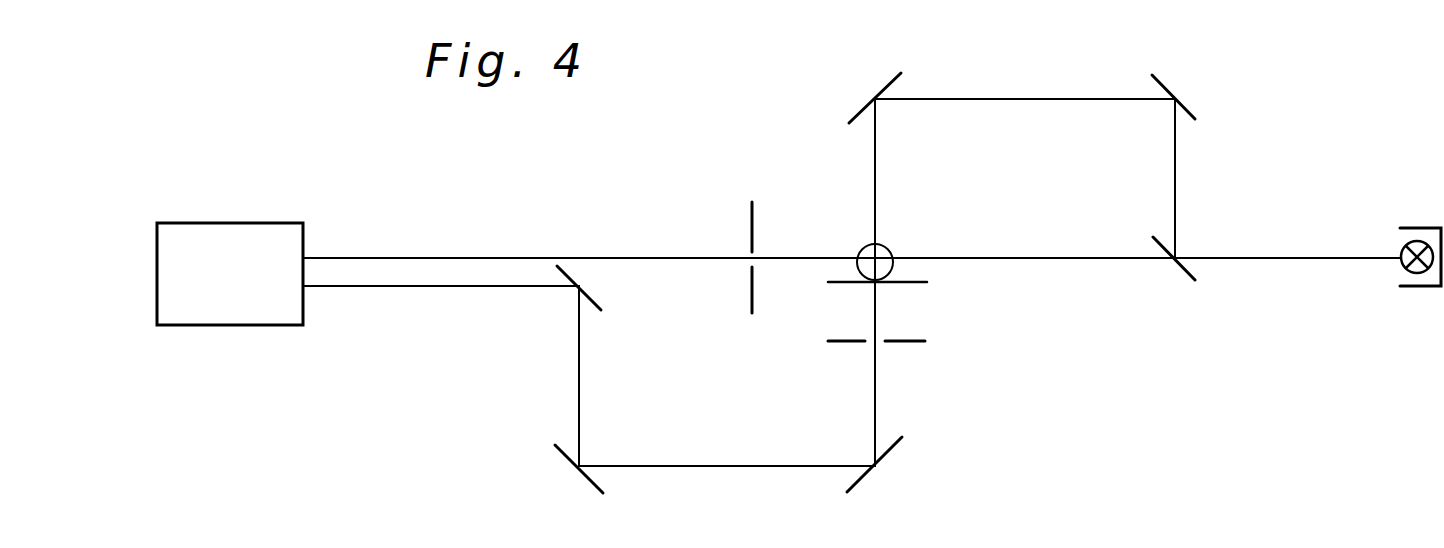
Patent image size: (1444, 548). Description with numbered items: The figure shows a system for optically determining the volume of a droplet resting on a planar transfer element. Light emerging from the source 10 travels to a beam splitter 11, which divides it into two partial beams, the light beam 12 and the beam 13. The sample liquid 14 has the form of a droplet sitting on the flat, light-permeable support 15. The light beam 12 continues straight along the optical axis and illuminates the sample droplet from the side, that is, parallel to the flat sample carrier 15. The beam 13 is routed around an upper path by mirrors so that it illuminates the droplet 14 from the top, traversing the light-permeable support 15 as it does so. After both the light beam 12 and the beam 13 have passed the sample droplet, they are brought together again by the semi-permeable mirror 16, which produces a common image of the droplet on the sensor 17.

The source 10 is at (1421, 241).
The beam splitter 11 is at (1186, 276).
The light beam 12 is at (1077, 260).
The beam 13 is at (1177, 205).
The sample liquid 14 is at (890, 245).
The support 15 is at (915, 283).
The semi-permeable mirror 16 is at (573, 275).
The sensor 17 is at (237, 310).